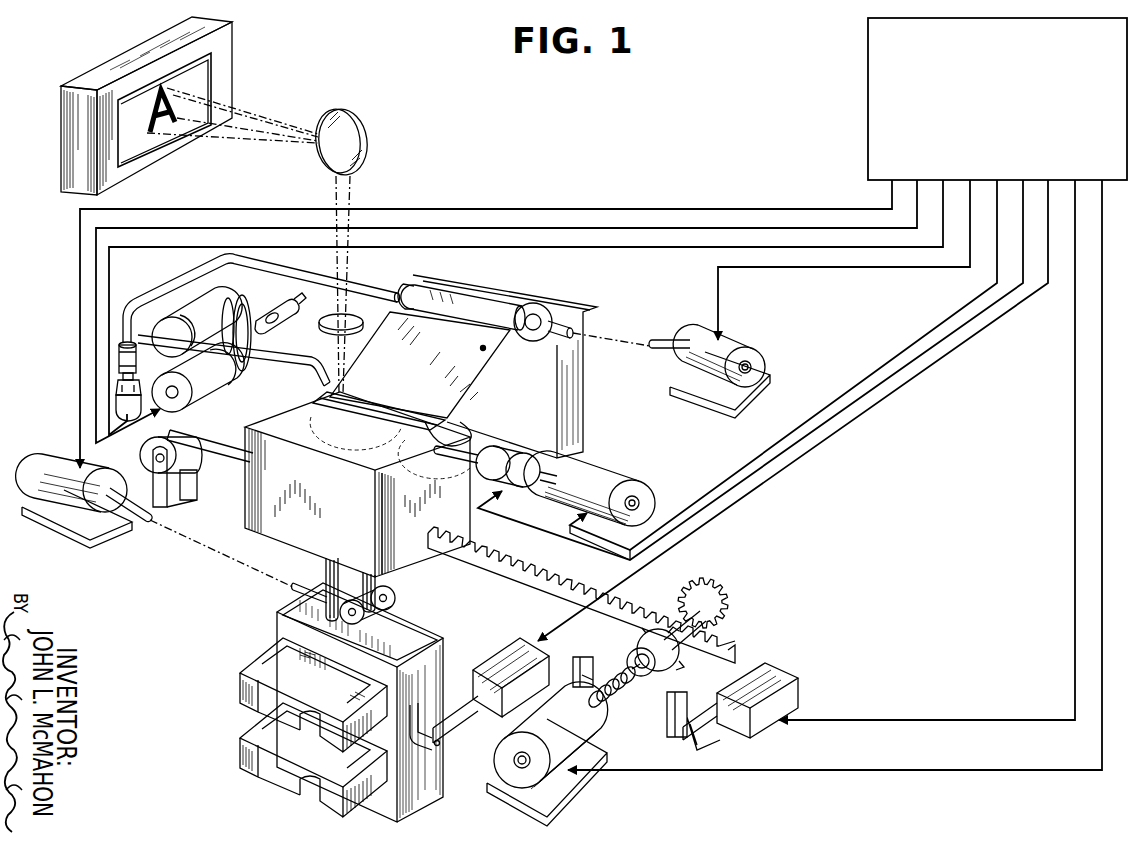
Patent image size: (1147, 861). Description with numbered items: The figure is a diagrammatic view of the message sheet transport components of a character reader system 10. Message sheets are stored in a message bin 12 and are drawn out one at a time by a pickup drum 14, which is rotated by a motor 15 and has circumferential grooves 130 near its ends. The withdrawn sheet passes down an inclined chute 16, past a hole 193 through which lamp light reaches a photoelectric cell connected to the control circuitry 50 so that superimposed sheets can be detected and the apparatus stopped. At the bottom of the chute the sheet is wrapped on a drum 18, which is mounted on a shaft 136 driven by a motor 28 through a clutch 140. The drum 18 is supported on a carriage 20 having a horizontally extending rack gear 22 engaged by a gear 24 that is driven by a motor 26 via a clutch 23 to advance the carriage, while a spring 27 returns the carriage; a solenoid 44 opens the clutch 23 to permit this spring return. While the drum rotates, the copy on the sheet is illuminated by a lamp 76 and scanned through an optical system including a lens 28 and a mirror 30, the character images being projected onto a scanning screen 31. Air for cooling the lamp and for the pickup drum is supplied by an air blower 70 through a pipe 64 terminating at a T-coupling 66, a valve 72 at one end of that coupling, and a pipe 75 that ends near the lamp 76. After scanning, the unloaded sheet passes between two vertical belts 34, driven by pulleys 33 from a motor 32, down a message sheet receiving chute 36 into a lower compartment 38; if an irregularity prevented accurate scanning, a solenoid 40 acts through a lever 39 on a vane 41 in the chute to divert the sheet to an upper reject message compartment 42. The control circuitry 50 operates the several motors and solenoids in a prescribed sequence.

The character reader system 10 is at (634, 166).
The message bin 12 is at (583, 395).
The pickup drum 14 is at (465, 297).
The motor 15 is at (732, 342).
The chute 16 is at (468, 388).
The drum 18 is at (378, 408).
The carriage 20 is at (413, 552).
The rack gear 22 is at (525, 578).
The clutch 23 is at (680, 663).
The gear 24 is at (722, 588).
The motor 26 is at (497, 761).
The spring 27 is at (207, 460).
The motor 28 is at (322, 322).
The mirror 30 is at (353, 128).
The scanning screen 31 is at (140, 142).
The motor 32 is at (40, 473).
The pulleys 33 is at (397, 604).
The belts 34 is at (327, 572).
The message sheet receiving chute 36 is at (440, 653).
The lower compartment 38 is at (253, 765).
The lever 39 is at (422, 707).
The solenoid 40 is at (501, 657).
The vane 41 is at (327, 672).
The upper reject message compartment 42 is at (263, 652).
The solenoid 44 is at (777, 668).
The control circuitry 50 is at (868, 97).
The pipe 64 is at (200, 272).
The T-coupling 66 is at (118, 362).
The air blower 70 is at (182, 312).
The valve 72 is at (115, 410).
The pipe 75 is at (258, 358).
The lamp 76 is at (288, 296).
The circumferential grooves 130 is at (513, 308).
The shaft 136 is at (567, 337).
The clutch 140 is at (527, 485).
The hole 193 is at (478, 347).